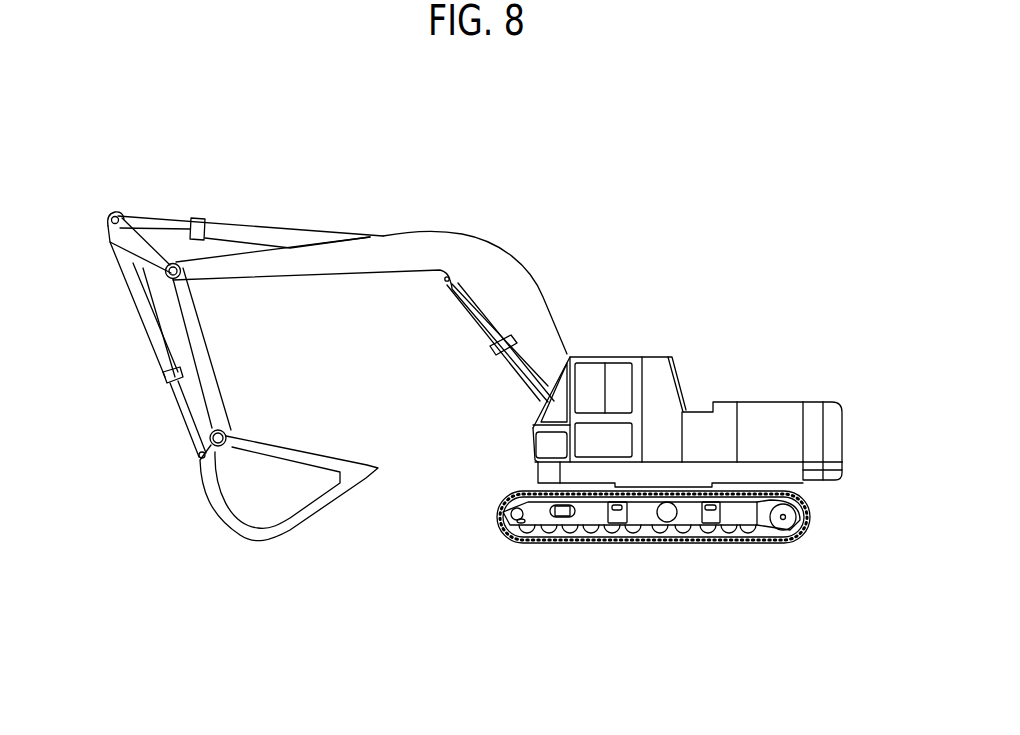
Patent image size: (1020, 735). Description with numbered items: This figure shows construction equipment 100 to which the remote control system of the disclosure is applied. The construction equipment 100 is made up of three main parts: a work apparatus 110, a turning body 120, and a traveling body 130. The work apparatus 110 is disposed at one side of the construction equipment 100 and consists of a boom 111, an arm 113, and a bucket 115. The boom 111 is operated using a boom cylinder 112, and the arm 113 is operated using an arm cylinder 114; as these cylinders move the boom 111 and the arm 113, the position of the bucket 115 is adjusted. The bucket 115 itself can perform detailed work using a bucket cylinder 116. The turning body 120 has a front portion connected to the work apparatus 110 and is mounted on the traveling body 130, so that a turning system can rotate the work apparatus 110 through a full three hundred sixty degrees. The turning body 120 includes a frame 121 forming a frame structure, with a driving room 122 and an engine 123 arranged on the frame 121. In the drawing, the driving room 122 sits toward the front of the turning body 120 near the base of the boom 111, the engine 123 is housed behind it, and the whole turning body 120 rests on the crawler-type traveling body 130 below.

The construction equipment 100 is at (799, 191).
The work apparatus 110 is at (325, 205).
The boom 111 is at (402, 248).
The boom cylinder 112 is at (517, 369).
The arm 113 is at (209, 368).
The arm cylinder 114 is at (220, 227).
The bucket 115 is at (246, 522).
The bucket cylinder 116 is at (149, 334).
The turning body 120 is at (692, 340).
The frame 121 is at (791, 482).
The driving room 122 is at (617, 357).
The engine 123 is at (757, 410).
The traveling body 130 is at (681, 555).